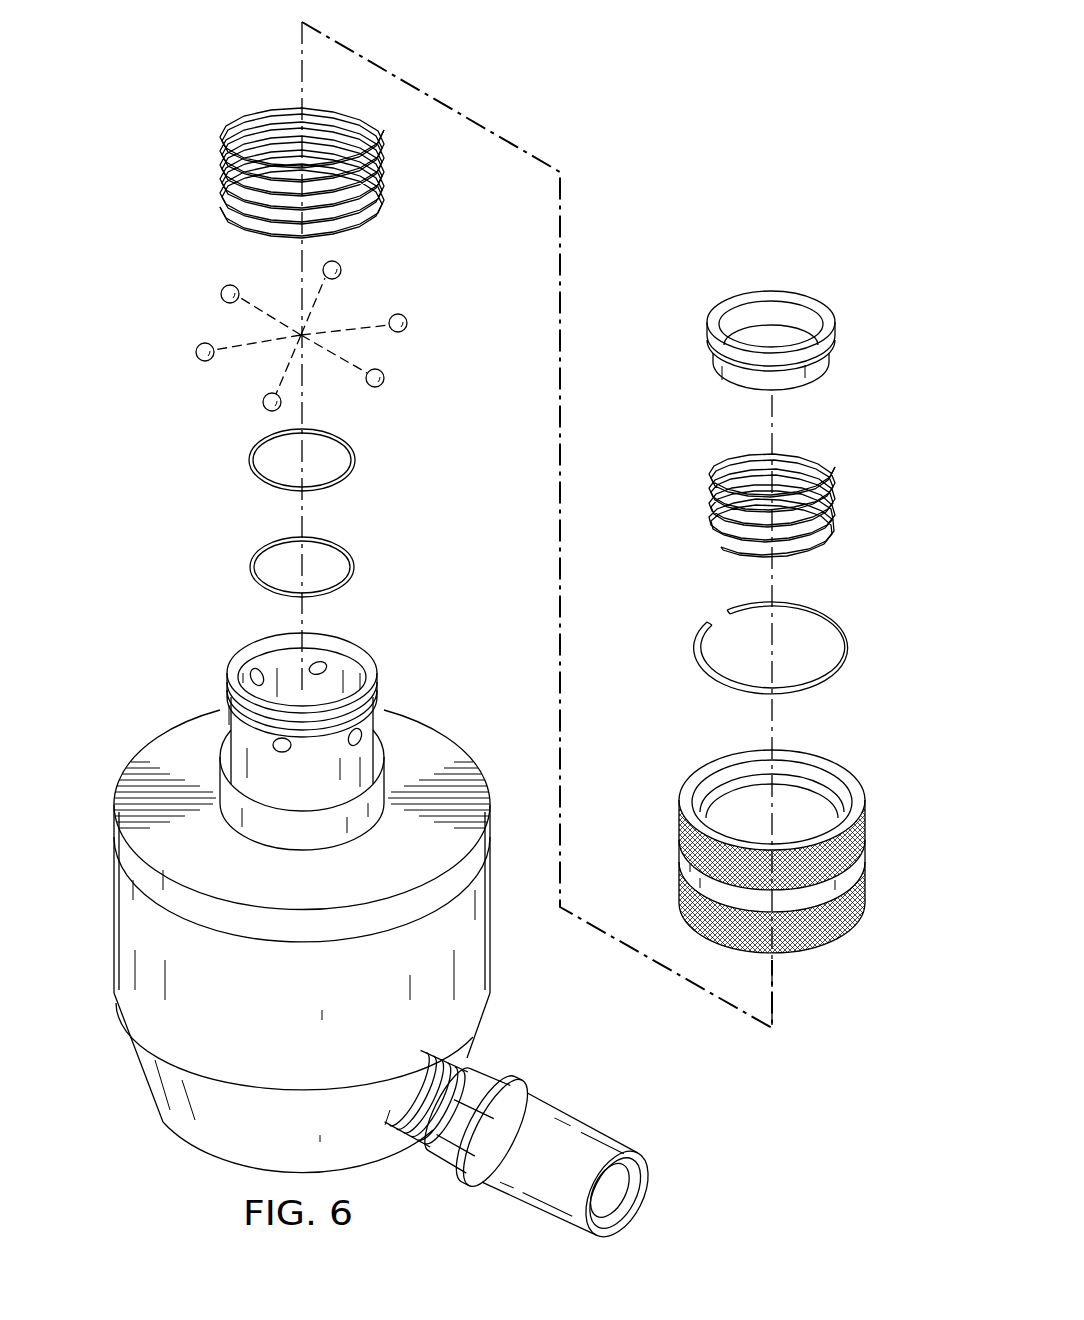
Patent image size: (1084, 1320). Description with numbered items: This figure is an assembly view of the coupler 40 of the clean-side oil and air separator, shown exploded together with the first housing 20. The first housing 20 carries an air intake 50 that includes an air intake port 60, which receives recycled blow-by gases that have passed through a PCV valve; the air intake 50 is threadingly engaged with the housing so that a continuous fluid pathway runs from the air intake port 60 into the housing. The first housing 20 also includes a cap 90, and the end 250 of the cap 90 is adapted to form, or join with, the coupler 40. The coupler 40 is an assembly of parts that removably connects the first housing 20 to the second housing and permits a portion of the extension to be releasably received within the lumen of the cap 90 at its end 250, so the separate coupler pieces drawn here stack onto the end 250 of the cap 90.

The first housing 20 is at (334, 925).
The coupler 40 is at (872, 775).
The air intake 50 is at (530, 1145).
The air intake port 60 is at (619, 1204).
The cap 90 is at (163, 730).
The end of cap 250 is at (247, 652).